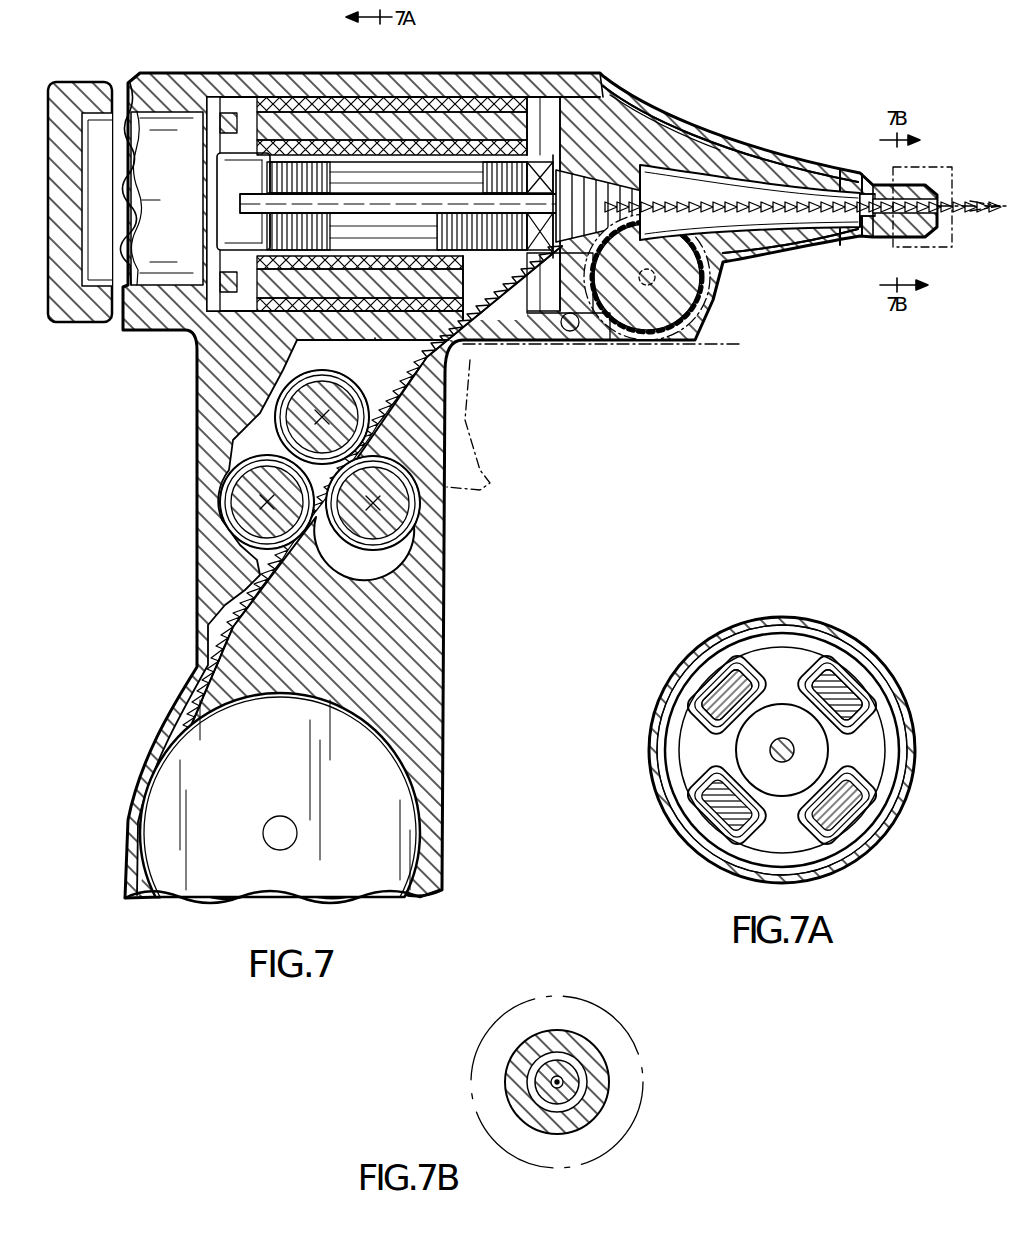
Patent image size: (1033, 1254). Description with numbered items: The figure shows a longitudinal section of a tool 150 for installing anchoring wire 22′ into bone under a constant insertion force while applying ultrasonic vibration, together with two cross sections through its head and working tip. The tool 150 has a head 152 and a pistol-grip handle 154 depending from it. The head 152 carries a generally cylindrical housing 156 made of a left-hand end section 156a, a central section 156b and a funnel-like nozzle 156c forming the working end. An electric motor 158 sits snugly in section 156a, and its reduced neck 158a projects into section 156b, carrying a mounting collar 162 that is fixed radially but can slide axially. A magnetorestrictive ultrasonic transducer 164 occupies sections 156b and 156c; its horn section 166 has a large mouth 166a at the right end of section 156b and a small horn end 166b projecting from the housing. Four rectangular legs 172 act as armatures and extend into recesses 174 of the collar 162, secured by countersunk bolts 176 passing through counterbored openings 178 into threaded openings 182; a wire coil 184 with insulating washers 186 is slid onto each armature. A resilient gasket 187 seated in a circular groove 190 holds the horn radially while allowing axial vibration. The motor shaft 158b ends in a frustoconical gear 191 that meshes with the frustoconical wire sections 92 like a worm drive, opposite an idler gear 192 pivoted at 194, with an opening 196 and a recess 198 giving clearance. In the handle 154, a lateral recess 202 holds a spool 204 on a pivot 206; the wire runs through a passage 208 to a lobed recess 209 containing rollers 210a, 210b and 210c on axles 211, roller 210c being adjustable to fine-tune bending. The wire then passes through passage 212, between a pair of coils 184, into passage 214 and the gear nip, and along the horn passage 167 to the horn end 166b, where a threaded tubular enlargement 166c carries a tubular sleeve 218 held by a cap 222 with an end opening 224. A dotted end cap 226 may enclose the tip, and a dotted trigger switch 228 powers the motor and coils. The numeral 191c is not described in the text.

In FIG. 7, the tool 150 is at (628, 58).
In FIG. 7, the head 152 is at (152, 358).
In FIG. 7, the handle 154 is at (170, 497).
In FIG. 7, the housing 156 is at (392, 85).
In FIG. 7, the left-hand end section 156a is at (165, 73).
In FIG. 7, the central section 156b is at (452, 97).
In FIG. 7A, the central section 156b is at (747, 750).
In FIG. 7, the nozzle 156c is at (655, 90).
In FIG. 7, the electric motor 158 is at (98, 122).
In FIG. 7, the neck 158a is at (225, 198).
In FIG. 7A, the neck 158a is at (818, 750).
In FIG. 7, the shaft 158b is at (405, 196).
In FIG. 7A, the shaft 158b is at (698, 750).
In FIG. 7, the mounting collar 162 is at (232, 113).
In FIG. 7, the magnetorestrictive ultrasonic transducer 164 is at (290, 322).
In FIG. 7, the horn section 166 is at (700, 168).
In FIG. 7, the mouth 166a is at (548, 97).
In FIG. 7, the horn end 166b is at (862, 180).
In FIG. 7, the tubular enlargement 166c is at (857, 237).
In FIG. 7B, the tubular enlargement 166c is at (603, 1117).
In FIG. 7, the horn passage 167 is at (735, 180).
In FIG. 7, the legs 172 is at (345, 115).
In FIG. 7A, the legs 172 is at (757, 735).
In FIG. 7, the recesses 174 is at (262, 73).
In FIG. 7, the countersunk bolts 176 is at (200, 135).
In FIG. 7, the counterbored axial openings 178 is at (214, 97).
In FIG. 7, the threaded openings 182 is at (298, 100).
In FIG. 7, the wire coil 184 is at (478, 97).
In FIG. 7A, the wire coil 184 is at (781, 650).
In FIG. 7, the insulating washers 186 is at (515, 100).
In FIG. 7, the resilient gasket 187 is at (600, 95).
In FIG. 7, the circular groove 190 is at (552, 140).
In FIG. 7, the frustoconical gear 191 is at (572, 172).
In FIG. 7, the gear housing wall 191c is at (660, 114).
In FIG. 7, the idler gear 192 is at (705, 300).
In FIG. 7, the pivot 194 is at (676, 338).
In FIG. 7, the opening 196 is at (612, 342).
In FIG. 7, the recess 198 is at (570, 338).
In FIG. 7, the lateral recess 202 is at (420, 806).
In FIG. 7, the spool 204 is at (405, 855).
In FIG. 7, the pivot 206 is at (270, 828).
In FIG. 7, the passage 208 is at (250, 660).
In FIG. 7, the lobed recess 209 is at (330, 550).
In FIG. 7, the roller 210a is at (240, 512).
In FIG. 7, the roller 210b is at (300, 417).
In FIG. 7, the roller 210c is at (420, 515).
In FIG. 7, the axles 211 is at (250, 492).
In FIG. 7, the passage 212 is at (470, 410).
In FIG. 7, the passage 214 is at (500, 340).
In FIG. 7, the tubular sleeve 218 is at (905, 238).
In FIG. 7B, the tubular sleeve 218 is at (483, 1085).
In FIG. 7, the cap 222 is at (927, 185).
In FIG. 7B, the cap 222 is at (609, 1082).
In FIG. 7, the end opening 224 is at (935, 245).
In FIG. 7, the end cap 226 is at (952, 167).
In FIG. 7B, the end cap 226 is at (597, 1082).
In FIG. 7, the trigger switch 228 is at (488, 464).
In FIG. 7, the anchoring wire 22′ is at (800, 200).
In FIG. 7B, the anchoring wire 22′ is at (487, 1066).
In FIG. 7, the frustoconical wire sections 92 is at (822, 192).